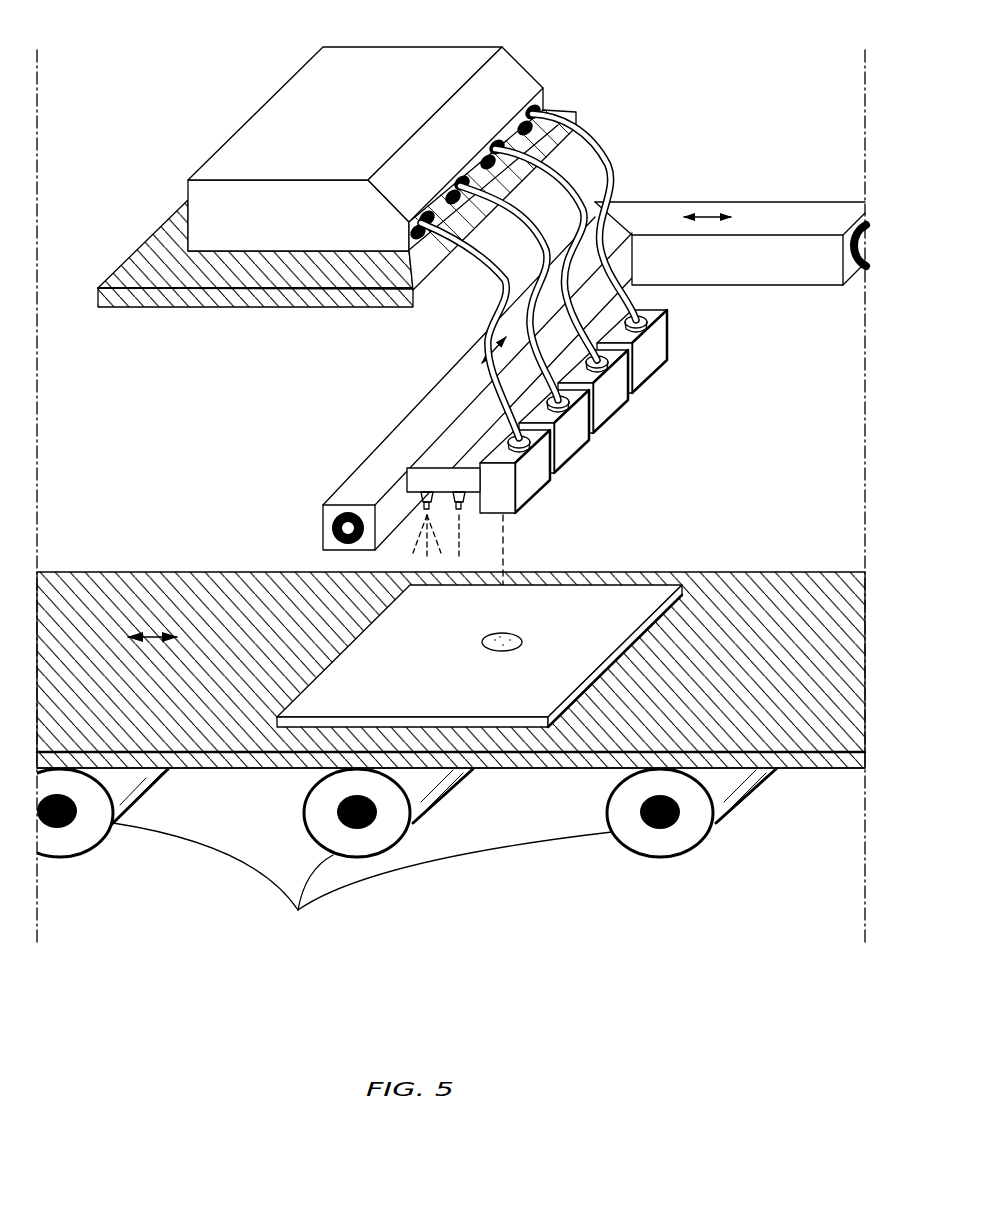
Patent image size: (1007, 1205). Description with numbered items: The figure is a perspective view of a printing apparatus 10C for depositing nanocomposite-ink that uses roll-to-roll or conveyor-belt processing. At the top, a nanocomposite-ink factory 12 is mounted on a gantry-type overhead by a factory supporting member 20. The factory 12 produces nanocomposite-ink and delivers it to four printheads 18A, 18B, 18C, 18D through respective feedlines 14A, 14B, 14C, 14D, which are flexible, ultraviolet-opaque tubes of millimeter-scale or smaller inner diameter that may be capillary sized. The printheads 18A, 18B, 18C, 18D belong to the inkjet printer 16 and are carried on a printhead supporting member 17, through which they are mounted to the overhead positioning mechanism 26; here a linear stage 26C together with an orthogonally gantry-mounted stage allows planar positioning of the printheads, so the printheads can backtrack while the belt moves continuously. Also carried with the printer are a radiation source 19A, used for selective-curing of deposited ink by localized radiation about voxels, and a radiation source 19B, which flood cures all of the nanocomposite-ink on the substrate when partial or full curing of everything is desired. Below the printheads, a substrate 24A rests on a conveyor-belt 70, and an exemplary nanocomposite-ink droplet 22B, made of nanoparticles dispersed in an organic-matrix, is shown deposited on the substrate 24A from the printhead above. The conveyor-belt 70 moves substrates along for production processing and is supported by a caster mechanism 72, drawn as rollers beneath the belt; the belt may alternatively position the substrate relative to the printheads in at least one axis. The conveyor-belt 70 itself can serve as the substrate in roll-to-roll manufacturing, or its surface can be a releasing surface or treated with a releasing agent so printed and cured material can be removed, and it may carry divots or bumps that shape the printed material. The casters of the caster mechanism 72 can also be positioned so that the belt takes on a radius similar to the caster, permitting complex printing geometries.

The printing apparatus 10C is at (578, 956).
The nanocomposite-ink factory 12 is at (250, 110).
The feedline 14A is at (485, 307).
The feedline 14B is at (528, 270).
The feedline 14C is at (558, 232).
The feedline 14D is at (593, 200).
The inkjet printer 16 is at (434, 434).
The printhead supporting member 17 is at (466, 373).
The printhead 18A is at (542, 489).
The printhead 18B is at (577, 452).
The printhead 18C is at (620, 408).
The printhead 18D is at (660, 367).
The radiation source 19A is at (420, 460).
The radiation source 19B is at (378, 503).
The factory supporting member 20 is at (150, 307).
The nanocomposite-ink droplet 22B is at (528, 642).
The substrate 24A is at (457, 697).
The positioning mechanism 26 is at (820, 200).
The linear stage 26C is at (765, 202).
The conveyor-belt 70 is at (193, 707).
The caster mechanism 72 is at (391, 855).